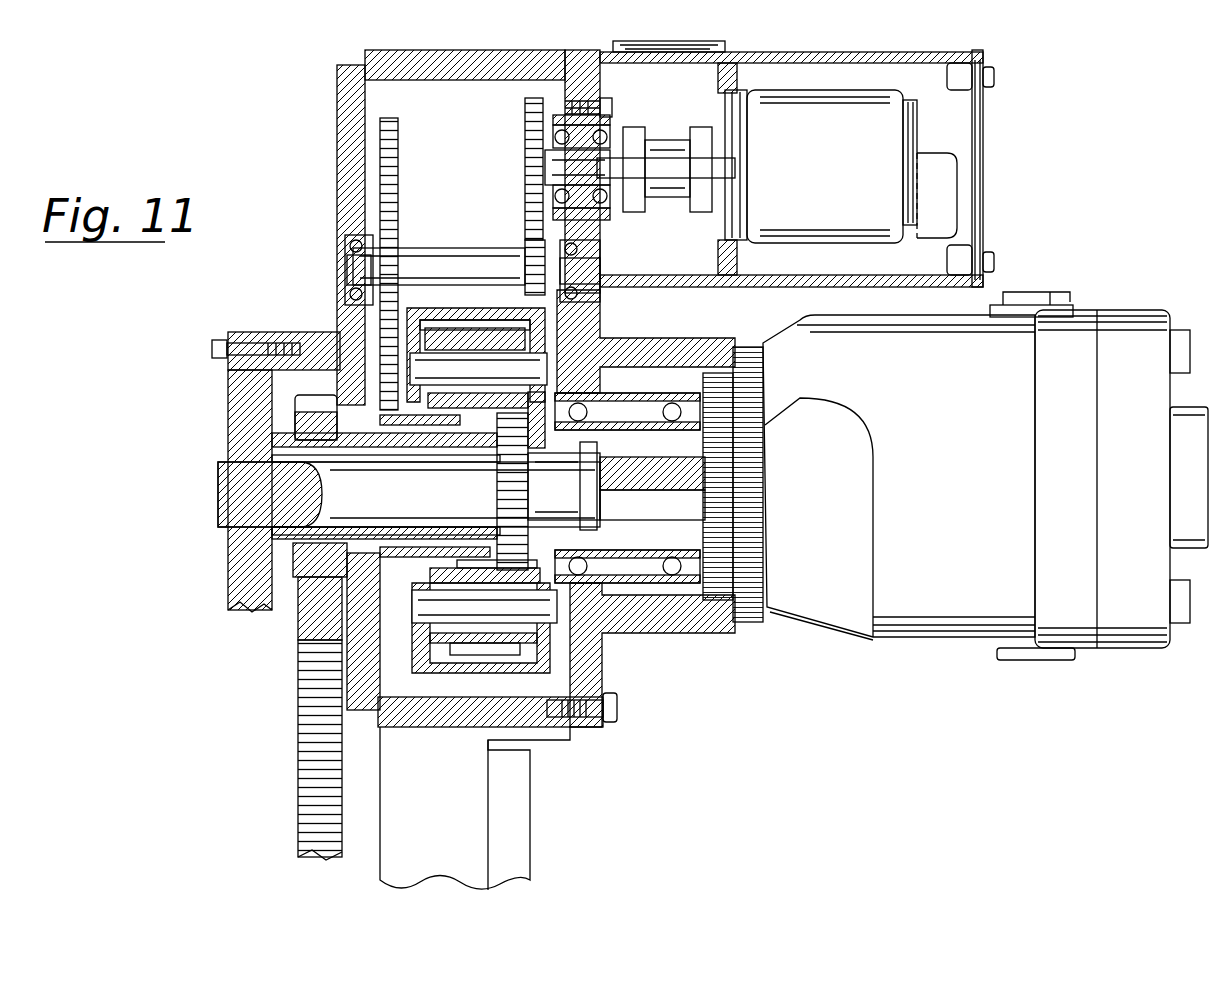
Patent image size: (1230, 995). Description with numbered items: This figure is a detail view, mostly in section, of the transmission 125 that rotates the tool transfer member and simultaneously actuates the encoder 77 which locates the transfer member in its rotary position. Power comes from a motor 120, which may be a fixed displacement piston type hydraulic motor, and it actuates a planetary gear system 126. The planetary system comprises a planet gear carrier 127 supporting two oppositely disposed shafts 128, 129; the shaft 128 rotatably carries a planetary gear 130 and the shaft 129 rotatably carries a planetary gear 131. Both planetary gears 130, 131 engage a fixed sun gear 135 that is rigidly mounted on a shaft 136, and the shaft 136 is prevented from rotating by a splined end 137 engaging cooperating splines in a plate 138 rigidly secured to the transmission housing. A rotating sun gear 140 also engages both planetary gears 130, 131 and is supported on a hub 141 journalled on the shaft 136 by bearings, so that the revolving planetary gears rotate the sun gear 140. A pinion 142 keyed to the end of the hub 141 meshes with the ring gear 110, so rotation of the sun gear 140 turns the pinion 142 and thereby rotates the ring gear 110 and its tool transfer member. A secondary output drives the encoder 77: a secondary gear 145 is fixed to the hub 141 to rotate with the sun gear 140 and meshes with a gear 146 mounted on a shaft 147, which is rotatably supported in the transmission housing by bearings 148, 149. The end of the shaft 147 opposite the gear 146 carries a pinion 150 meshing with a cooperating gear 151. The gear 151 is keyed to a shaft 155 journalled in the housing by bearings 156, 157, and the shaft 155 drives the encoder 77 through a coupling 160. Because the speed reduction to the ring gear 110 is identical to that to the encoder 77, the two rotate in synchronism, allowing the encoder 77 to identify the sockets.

The encoder 77 is at (878, 130).
The ring gear 110 is at (302, 683).
The motor 120 is at (930, 582).
The transmission 125 is at (630, 645).
The planetary gear system 126 is at (444, 684).
The planet gear carrier 127 is at (480, 680).
The shaft 128 is at (450, 340).
The shaft 129 is at (428, 598).
The planetary gear 130 is at (460, 360).
The planetary gear 131 is at (508, 652).
The fixed sun gear 135 is at (528, 478).
The shaft 136 is at (305, 486).
The splined end 137 is at (242, 521).
The plate 138 is at (245, 390).
The rotating sun gear 140 is at (484, 430).
The hub 141 is at (370, 456).
The pinion 142 is at (313, 396).
The secondary gear 145 is at (406, 434).
The gear 146 is at (388, 118).
The shaft 147 is at (410, 256).
The bearing 148 is at (345, 246).
The bearing 149 is at (582, 292).
The pinion 150 is at (530, 250).
The gear 151 is at (523, 110).
The shaft 155 is at (606, 166).
The bearing 156 is at (552, 150).
The bearing 157 is at (594, 122).
The coupling 160 is at (660, 140).